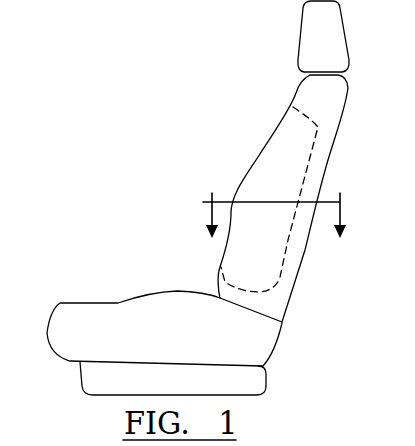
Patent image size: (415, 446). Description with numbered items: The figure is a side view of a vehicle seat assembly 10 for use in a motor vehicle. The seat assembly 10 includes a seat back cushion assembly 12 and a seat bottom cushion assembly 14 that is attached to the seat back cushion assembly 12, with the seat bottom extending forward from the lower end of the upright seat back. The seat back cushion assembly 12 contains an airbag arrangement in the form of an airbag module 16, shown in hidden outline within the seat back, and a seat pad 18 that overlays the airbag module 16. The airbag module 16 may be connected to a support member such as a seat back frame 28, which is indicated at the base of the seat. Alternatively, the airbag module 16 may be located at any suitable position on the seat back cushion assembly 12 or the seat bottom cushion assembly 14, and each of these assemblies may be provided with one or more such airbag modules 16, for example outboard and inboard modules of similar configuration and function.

The vehicle seat assembly 10 is at (103, 70).
The seat back cushion assembly 12 is at (248, 162).
The seat bottom cushion assembly 14 is at (100, 302).
The airbag module 16 is at (333, 133).
The seat pad 18 is at (313, 95).
The seat back frame 28 is at (255, 383).